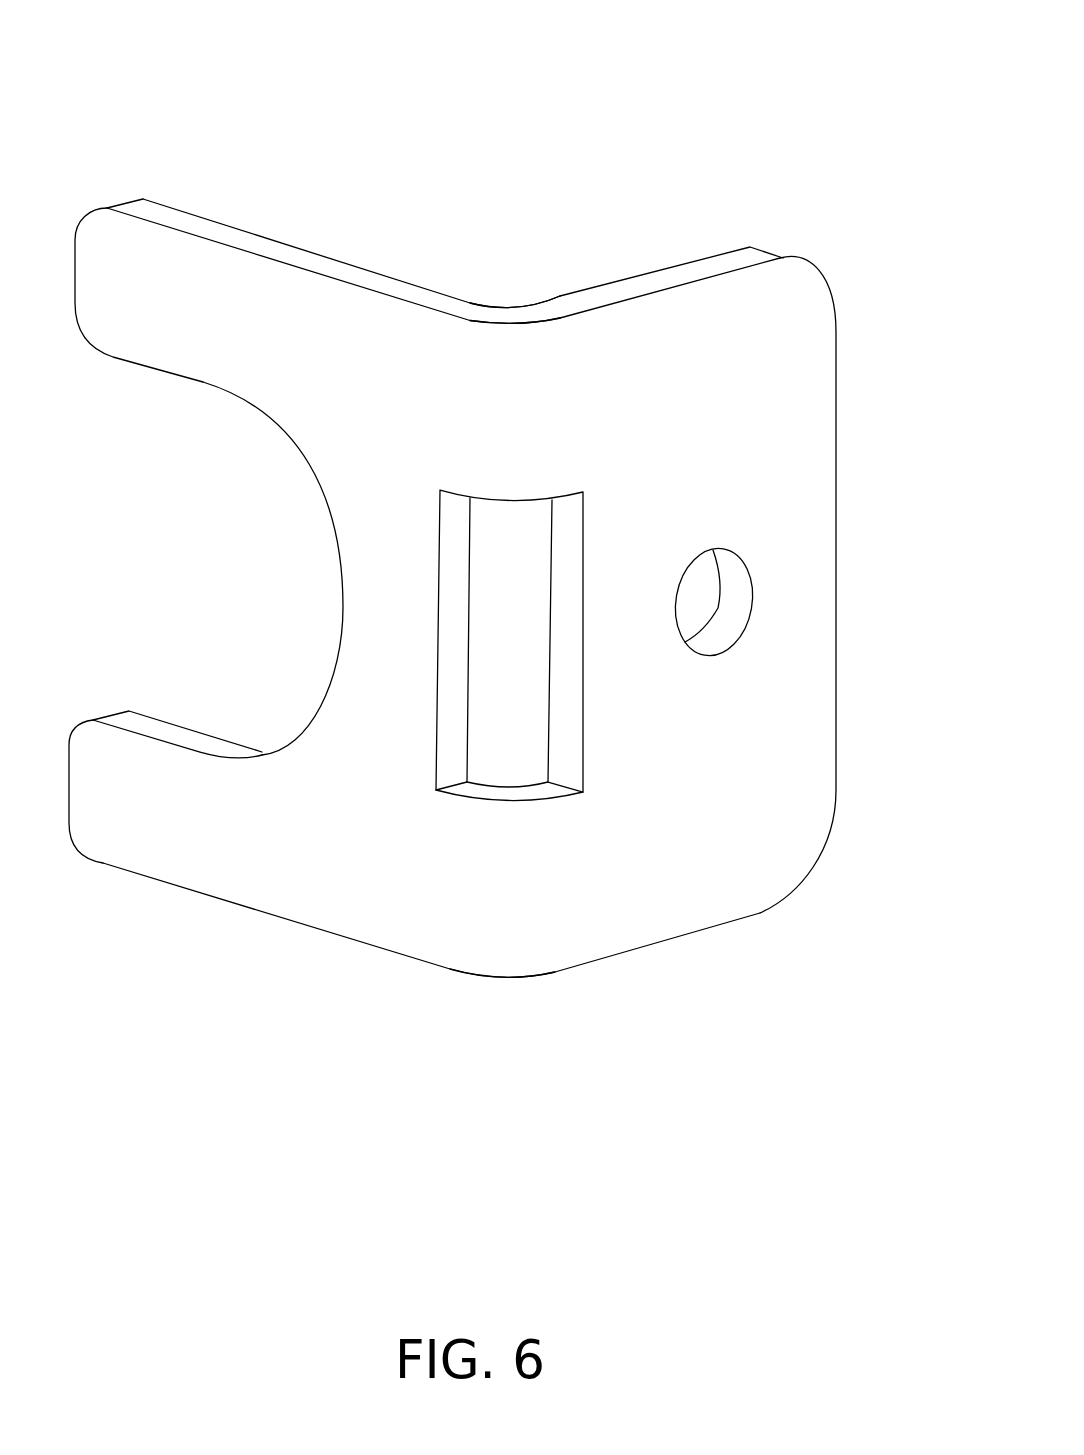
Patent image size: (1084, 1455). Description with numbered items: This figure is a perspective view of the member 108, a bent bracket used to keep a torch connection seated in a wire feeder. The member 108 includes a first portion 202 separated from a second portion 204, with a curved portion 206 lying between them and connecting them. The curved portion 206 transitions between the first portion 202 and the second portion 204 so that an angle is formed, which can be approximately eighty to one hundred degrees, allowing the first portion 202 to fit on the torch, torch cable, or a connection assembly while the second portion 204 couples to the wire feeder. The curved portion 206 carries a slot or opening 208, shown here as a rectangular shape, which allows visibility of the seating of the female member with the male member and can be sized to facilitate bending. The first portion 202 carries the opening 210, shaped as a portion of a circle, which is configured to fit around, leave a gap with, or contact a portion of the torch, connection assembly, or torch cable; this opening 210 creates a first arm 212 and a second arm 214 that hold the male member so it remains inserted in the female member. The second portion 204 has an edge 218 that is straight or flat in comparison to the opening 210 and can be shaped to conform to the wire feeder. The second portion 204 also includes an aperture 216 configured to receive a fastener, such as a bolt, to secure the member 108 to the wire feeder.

The member 108 is at (502, 488).
The first portion 202 is at (113, 200).
The second portion 204 is at (750, 250).
The curved portion 206 is at (540, 305).
The opening 208 is at (525, 712).
The opening 210 is at (162, 570).
The first arm 212 is at (152, 301).
The second arm 214 is at (152, 813).
The aperture 216 is at (712, 607).
The edge 218 is at (838, 535).